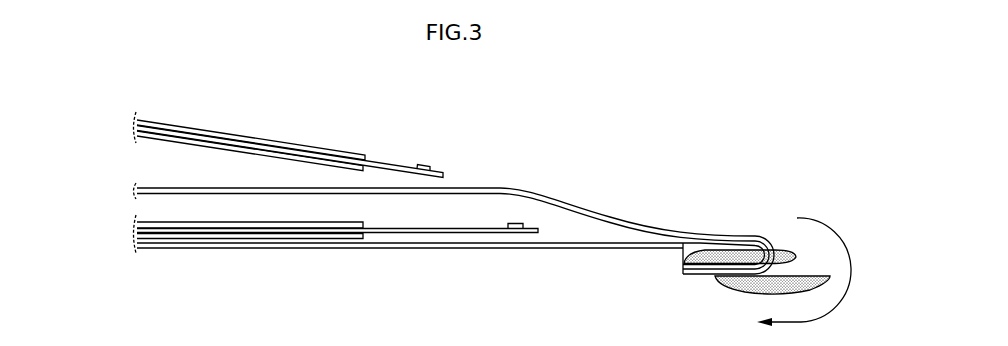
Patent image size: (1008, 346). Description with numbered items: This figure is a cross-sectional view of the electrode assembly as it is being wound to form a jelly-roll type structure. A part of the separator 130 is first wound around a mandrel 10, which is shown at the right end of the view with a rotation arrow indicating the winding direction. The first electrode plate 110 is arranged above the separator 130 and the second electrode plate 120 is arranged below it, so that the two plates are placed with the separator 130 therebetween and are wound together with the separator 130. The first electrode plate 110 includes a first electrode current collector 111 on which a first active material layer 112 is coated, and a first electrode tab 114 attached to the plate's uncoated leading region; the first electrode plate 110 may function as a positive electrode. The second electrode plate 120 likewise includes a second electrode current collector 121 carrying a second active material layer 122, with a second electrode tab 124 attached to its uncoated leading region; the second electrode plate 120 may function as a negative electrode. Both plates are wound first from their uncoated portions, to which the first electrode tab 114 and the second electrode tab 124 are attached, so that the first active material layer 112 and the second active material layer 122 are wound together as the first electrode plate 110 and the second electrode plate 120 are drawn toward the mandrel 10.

The mandrel 10 is at (733, 289).
The first electrode plate 110 is at (267, 137).
The first electrode current collector 111 is at (341, 160).
The first active material layer 112 is at (292, 152).
The first electrode tab 114 is at (425, 164).
The second electrode plate 120 is at (300, 254).
The second electrode current collector 121 is at (346, 230).
The second active material layer 122 is at (272, 236).
The second electrode tab 124 is at (515, 230).
The separator 130 is at (636, 247).